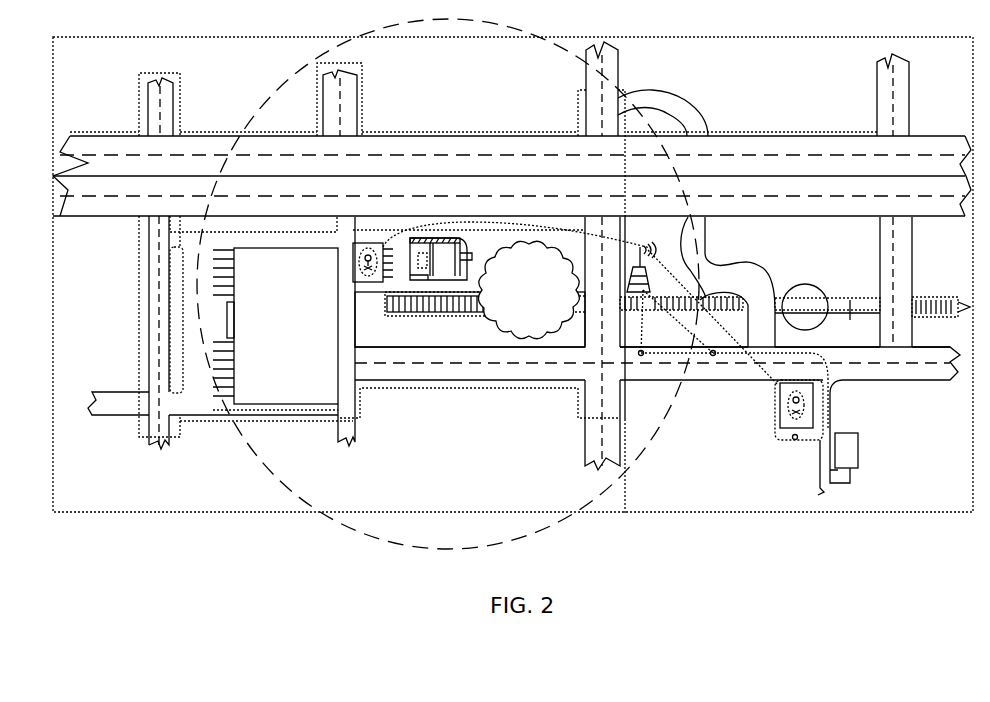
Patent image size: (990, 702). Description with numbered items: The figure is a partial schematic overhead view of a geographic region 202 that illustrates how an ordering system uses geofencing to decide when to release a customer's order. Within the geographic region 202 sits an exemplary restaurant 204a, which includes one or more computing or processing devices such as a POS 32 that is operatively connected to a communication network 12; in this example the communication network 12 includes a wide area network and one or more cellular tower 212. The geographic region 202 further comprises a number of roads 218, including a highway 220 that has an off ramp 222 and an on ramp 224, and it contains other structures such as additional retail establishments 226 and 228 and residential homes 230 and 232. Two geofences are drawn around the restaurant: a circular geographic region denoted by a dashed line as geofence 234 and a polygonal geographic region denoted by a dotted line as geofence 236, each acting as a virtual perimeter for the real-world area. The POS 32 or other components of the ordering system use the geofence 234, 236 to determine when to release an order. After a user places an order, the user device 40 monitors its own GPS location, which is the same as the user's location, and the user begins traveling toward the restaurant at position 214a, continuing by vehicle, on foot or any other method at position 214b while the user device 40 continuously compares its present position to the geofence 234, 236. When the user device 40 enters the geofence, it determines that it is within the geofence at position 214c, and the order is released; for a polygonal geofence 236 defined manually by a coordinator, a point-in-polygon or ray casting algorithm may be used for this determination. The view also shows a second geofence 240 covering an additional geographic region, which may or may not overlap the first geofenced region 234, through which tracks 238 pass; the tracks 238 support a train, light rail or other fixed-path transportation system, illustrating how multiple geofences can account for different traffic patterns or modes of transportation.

The geographic region 202 is at (812, 109).
The restaurant 204a is at (468, 250).
The communication network 12 is at (544, 308).
The cellular tower 212 is at (702, 304).
The position 214a is at (792, 440).
The position 214b is at (713, 356).
The position 214c is at (642, 356).
The roads 218 is at (157, 335).
The highway 220 is at (790, 217).
The off ramp 222 is at (690, 100).
The on ramp 224 is at (748, 266).
The retail establishment 226 is at (305, 341).
The retail establishment 228 is at (362, 283).
The residential home 230 is at (778, 412).
The residential home 232 is at (843, 431).
The geofence 234 is at (452, 24).
The geofence 236 is at (362, 108).
The tracks 238 is at (795, 322).
The second geofence 240 is at (816, 283).
The POS 32 is at (447, 281).
The user device 40 is at (352, 258).